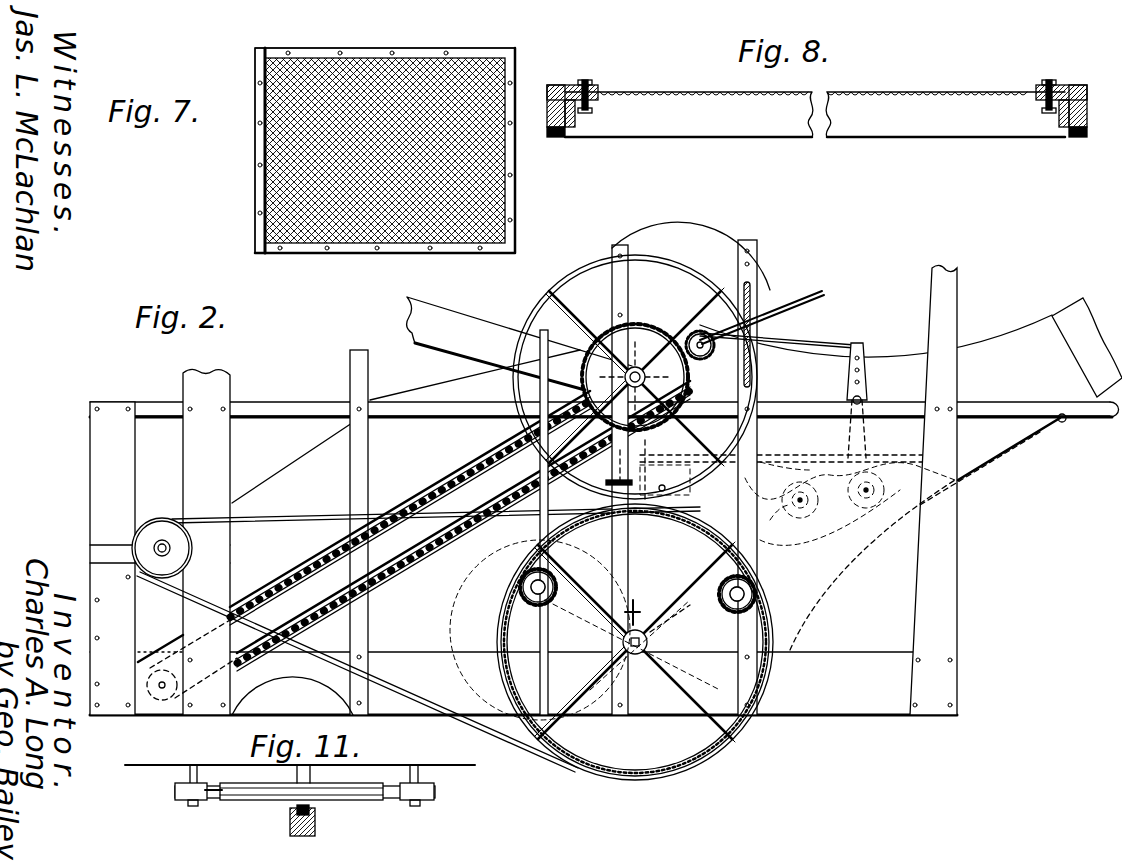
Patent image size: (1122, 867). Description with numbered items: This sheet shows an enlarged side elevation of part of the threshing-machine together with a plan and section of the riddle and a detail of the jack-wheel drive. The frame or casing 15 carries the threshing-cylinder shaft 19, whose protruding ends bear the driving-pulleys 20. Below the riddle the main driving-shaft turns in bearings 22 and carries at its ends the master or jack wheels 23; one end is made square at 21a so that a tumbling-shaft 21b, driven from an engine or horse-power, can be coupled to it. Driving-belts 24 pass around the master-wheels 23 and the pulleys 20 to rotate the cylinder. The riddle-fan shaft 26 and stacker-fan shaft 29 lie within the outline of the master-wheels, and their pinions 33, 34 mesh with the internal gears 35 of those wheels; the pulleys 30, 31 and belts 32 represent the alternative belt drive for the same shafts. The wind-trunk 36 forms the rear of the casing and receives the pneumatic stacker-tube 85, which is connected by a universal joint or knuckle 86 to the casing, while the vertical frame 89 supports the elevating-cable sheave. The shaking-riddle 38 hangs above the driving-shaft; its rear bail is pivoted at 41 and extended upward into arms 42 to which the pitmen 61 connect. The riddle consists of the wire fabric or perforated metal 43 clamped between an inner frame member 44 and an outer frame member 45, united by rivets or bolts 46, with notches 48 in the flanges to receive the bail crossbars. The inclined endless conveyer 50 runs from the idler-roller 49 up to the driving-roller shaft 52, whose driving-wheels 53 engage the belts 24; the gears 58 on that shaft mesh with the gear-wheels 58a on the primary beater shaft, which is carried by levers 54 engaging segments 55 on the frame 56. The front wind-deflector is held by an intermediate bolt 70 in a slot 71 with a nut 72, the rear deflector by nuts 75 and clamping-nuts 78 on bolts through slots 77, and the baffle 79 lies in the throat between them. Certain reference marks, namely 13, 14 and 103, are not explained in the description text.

In FIG. 2, the chain 13 is at (740, 470).
In FIG. 2, the sprocket 14 is at (725, 478).
In FIG. 2, the frame or casing 15 is at (604, 558).
In FIG. 11, the frame or casing 15 is at (250, 800).
In FIG. 2, the threshing-cylinder shaft 19 is at (150, 540).
In FIG. 2, the driving-pulleys 20 is at (172, 536).
In FIG. 2, the square or polygonal end of main driving-shaft 21a is at (640, 656).
In FIG. 11, the square or polygonal end of main driving-shaft 21a is at (312, 812).
In FIG. 11, the tumbling-shaft 21b is at (316, 832).
In FIG. 2, the bearings 22 is at (632, 645).
In FIG. 2, the master or jack wheels 23 is at (600, 775).
In FIG. 2, the driving-belts 24 is at (458, 512).
In FIG. 2, the riddle-fan shaft 26 is at (548, 580).
In FIG. 11, the riddle-fan shaft 26 is at (190, 776).
In FIG. 2, the stacker-fan shaft 29 is at (728, 598).
In FIG. 11, the stacker-fan shaft 29 is at (418, 776).
In FIG. 11, the pulley 30 is at (182, 803).
In FIG. 11, the pulley 31 is at (428, 803).
In FIG. 11, the belts 32 is at (214, 798).
In FIG. 2, the pinion 33 is at (535, 605).
In FIG. 2, the pinion 34 is at (732, 610).
In FIG. 2, the internal gears 35 is at (662, 768).
In FIG. 2, the wind-trunk 36 is at (1000, 455).
In FIG. 7, the shaking-riddle 38 is at (260, 160).
In FIG. 8, the shaking-riddle 38 is at (866, 137).
In FIG. 2, the pivot 41 is at (852, 396).
In FIG. 2, the arms 42 is at (868, 386).
In FIG. 8, the wire fabric or perforated metal 43 is at (650, 92).
In FIG. 7, the inner frame member 44 is at (260, 192).
In FIG. 8, the inner frame member 44 is at (552, 85).
In FIG. 8, the outer frame member 45 is at (572, 118).
In FIG. 7, the rivets or bolts 46 is at (340, 53).
In FIG. 8, the rivets or bolts 46 is at (588, 80).
In FIG. 8, the notches 48 is at (558, 137).
In FIG. 2, the idler-roller 49 is at (165, 706).
In FIG. 2, the inclined endless conveyer 50 is at (300, 625).
In FIG. 2, the driving-roller shaft 52 is at (636, 366).
In FIG. 2, the driving-wheels 53 is at (595, 450).
In FIG. 2, the levers 54 is at (800, 300).
In FIG. 2, the segments 55 is at (751, 310).
In FIG. 2, the frame 56 is at (758, 270).
In FIG. 2, the gears 58 is at (650, 326).
In FIG. 2, the gear-wheels 58a is at (706, 356).
In FIG. 2, the pitmen 61 is at (835, 340).
In FIG. 2, the bolt 70 is at (606, 482).
In FIG. 2, the slot 71 is at (642, 460).
In FIG. 2, the nut 72 is at (620, 478).
In FIG. 2, the nuts 75 is at (740, 480).
In FIG. 2, the slots 77 is at (640, 616).
In FIG. 2, the clamping-nuts 78 is at (634, 603).
In FIG. 2, the baffle 79 is at (665, 480).
In FIG. 2, the pneumatic stacker-tube 85 is at (1070, 310).
In FIG. 2, the universal joint or knuckle 86 is at (1066, 420).
In FIG. 2, the vertical frame 89 is at (950, 320).
In FIG. 2, the brace 103 is at (226, 448).